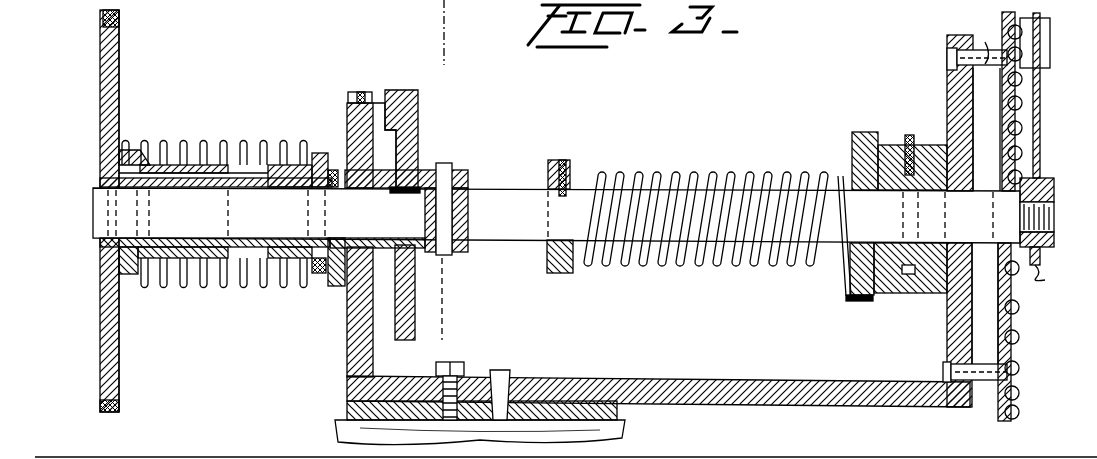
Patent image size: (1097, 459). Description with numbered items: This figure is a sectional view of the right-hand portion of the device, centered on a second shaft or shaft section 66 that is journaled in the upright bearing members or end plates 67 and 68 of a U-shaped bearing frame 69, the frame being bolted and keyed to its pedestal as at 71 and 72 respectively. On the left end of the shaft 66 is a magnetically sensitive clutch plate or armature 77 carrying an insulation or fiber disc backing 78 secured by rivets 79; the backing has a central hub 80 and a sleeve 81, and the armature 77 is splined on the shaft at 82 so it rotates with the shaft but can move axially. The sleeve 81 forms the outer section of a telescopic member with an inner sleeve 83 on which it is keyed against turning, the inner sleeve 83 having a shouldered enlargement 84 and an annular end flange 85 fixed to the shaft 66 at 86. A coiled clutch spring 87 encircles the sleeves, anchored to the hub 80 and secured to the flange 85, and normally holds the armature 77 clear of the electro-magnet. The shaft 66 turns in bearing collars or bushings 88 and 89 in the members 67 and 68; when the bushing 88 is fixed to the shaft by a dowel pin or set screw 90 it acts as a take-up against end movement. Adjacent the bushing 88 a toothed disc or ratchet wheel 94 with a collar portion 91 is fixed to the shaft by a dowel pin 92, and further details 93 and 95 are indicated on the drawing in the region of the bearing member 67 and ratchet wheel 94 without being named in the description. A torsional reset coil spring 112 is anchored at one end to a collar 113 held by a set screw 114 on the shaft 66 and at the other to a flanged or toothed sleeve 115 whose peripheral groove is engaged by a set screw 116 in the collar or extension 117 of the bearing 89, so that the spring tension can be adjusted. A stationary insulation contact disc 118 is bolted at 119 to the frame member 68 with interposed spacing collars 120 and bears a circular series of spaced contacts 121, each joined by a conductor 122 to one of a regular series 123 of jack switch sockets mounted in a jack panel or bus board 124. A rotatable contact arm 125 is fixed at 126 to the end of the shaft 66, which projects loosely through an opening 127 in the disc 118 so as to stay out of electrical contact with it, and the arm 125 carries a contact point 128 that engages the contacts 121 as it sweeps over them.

The second shaft 66 is at (485, 190).
The upright bearing member 67 is at (348, 110).
The upright bearing member 68 is at (950, 89).
The U-shaped bearing frame 69 is at (651, 377).
The bolt 71 is at (462, 364).
The key 72 is at (510, 372).
The clutch armature 77 is at (100, 80).
The fiber disc backing 78 is at (119, 60).
The rivets 79 is at (103, 19).
The central hub 80 is at (130, 152).
The sleeve 81 is at (209, 160).
The spline 82 is at (100, 177).
The inner sleeve 83 is at (250, 168).
The enlargement 84 is at (265, 288).
The annular end flange 85 is at (322, 284).
The fixing point 86 is at (316, 216).
The coiled clutch spring 87 is at (182, 286).
The bearing sleeve 88 is at (338, 238).
The bearing 89 is at (983, 258).
The set screw 90 is at (334, 170).
The collar portion 91 is at (452, 256).
The dowel pin 92 is at (445, 163).
The cap 93 is at (368, 88).
The ratchet wheel 94 is at (398, 90).
The shim 95 is at (404, 195).
The torsional reset coil spring 112 is at (668, 266).
The collar 113 is at (550, 274).
The set screw 114 is at (566, 160).
The toothed sleeve 115 is at (852, 146).
The set screw 116 is at (908, 136).
The collar extension 117 is at (928, 294).
The stationary contact disc 118 is at (1014, 354).
The bolt 119 is at (947, 58).
The spacing collars 120 is at (985, 50).
The contacts 121 is at (1022, 82).
The conductor 122 is at (1010, 10).
The series of jack switch sockets 123 is at (774, 457).
The jack panel 124 is at (926, 457).
The rotatable contact arm 125 is at (1040, 141).
The fixing point 126 is at (1048, 192).
The opening 127 is at (1050, 280).
The contact point 128 is at (292, 456).